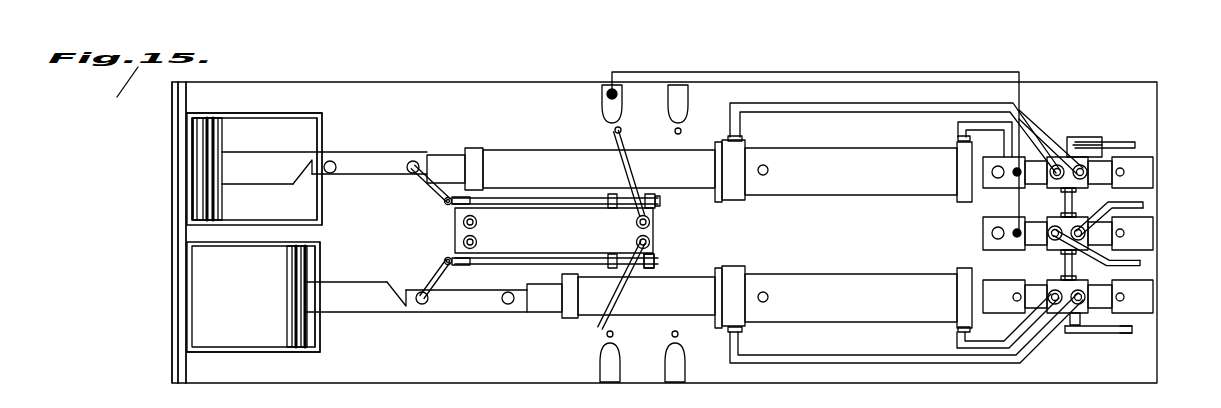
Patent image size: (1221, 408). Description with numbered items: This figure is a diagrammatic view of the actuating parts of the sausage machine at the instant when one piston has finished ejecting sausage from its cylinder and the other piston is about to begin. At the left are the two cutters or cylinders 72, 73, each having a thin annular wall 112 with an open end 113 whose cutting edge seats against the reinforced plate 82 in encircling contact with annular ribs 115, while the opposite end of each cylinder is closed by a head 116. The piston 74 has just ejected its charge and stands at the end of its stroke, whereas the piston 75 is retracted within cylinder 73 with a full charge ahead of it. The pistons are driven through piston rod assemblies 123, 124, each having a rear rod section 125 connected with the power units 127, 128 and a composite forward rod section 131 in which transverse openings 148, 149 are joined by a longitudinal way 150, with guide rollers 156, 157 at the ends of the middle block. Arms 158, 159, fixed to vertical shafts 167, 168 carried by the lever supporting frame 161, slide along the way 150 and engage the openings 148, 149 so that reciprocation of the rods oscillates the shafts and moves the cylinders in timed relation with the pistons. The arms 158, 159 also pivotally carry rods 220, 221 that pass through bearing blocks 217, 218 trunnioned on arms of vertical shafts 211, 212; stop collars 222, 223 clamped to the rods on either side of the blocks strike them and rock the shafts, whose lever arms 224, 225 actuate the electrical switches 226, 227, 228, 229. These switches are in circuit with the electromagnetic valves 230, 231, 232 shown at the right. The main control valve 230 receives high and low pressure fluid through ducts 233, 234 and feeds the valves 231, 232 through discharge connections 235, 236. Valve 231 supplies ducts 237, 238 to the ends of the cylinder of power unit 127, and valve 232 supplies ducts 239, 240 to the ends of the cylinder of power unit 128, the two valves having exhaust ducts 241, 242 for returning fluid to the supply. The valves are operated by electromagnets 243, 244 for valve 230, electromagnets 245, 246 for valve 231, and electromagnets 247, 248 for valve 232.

The cutter or cylinder 72 is at (308, 113).
The cutter or cylinder 73 is at (315, 242).
The piston 74 is at (216, 148).
The piston 75 is at (303, 335).
The plate 82 is at (178, 145).
The annular wall 112 is at (238, 113).
The open end 113 is at (198, 172).
The annular ribs 115 is at (190, 192).
The head 116 is at (322, 135).
The piston rod assembly 123 is at (485, 150).
The piston rod assembly 124 is at (560, 318).
The rear rod section 125 is at (683, 188).
The power unit 127 is at (828, 196).
The power unit 128 is at (842, 318).
The forward rod section 131 is at (403, 152).
The transverse opening 148 is at (428, 157).
The transverse opening 149 is at (312, 166).
The longitudinal groove or way 150 is at (390, 176).
The guide roller 156 is at (407, 167).
The guide roller 157 is at (333, 163).
The arm 158 is at (435, 188).
The arm 159 is at (427, 273).
The lever supporting frame 161 is at (655, 231).
The vertical shaft 167 is at (477, 222).
The vertical shaft 168 is at (477, 242).
The vertical shaft 211 is at (636, 222).
The vertical shaft 212 is at (636, 242).
The bearing block 217 is at (650, 194).
The bearing block 218 is at (645, 268).
The rod 220 is at (557, 181).
The rod 221 is at (563, 249).
The stop collar 222 is at (618, 196).
The stop collar 223 is at (660, 196).
The lever arm 224 is at (612, 138).
The lever arm 225 is at (618, 310).
The electrical switch 226 is at (602, 102).
The electrical switch 227 is at (688, 99).
The electrical switch 228 is at (602, 364).
The electrical switch 229 is at (686, 364).
The main control valve 230 is at (1052, 243).
The electromagnetic valve 231 is at (1088, 143).
The electromagnetic valve 232 is at (1083, 333).
The duct 233 is at (1145, 264).
The duct 234 is at (1143, 205).
The discharge connection 235 is at (1065, 204).
The discharge connection 236 is at (1070, 268).
The duct 237 is at (740, 125).
The duct 238 is at (985, 122).
The duct 239 is at (990, 348).
The duct 240 is at (738, 343).
The exhaust duct 241 is at (1083, 137).
The exhaust duct 242 is at (1122, 334).
The electromagnet 243 is at (993, 234).
The electromagnet 244 is at (1143, 234).
The electromagnet 245 is at (983, 169).
The electromagnet 246 is at (1140, 172).
The electromagnet 247 is at (997, 282).
The electromagnet 248 is at (1143, 297).